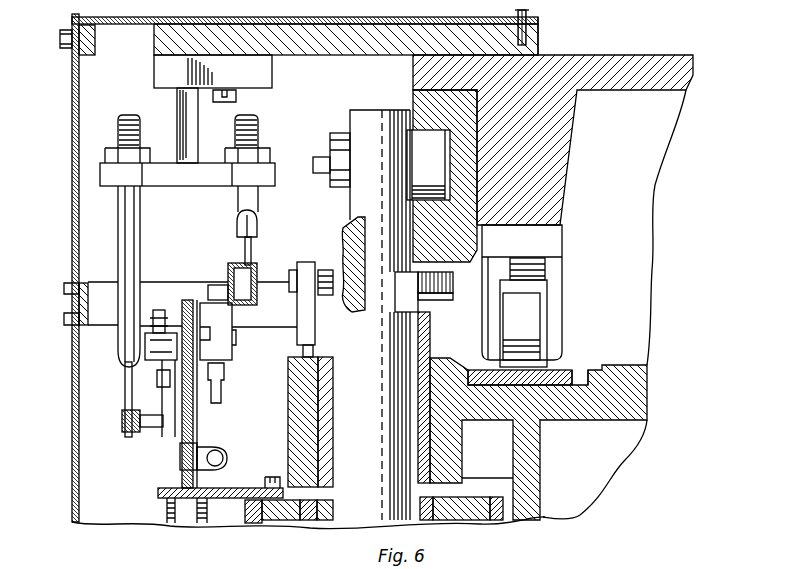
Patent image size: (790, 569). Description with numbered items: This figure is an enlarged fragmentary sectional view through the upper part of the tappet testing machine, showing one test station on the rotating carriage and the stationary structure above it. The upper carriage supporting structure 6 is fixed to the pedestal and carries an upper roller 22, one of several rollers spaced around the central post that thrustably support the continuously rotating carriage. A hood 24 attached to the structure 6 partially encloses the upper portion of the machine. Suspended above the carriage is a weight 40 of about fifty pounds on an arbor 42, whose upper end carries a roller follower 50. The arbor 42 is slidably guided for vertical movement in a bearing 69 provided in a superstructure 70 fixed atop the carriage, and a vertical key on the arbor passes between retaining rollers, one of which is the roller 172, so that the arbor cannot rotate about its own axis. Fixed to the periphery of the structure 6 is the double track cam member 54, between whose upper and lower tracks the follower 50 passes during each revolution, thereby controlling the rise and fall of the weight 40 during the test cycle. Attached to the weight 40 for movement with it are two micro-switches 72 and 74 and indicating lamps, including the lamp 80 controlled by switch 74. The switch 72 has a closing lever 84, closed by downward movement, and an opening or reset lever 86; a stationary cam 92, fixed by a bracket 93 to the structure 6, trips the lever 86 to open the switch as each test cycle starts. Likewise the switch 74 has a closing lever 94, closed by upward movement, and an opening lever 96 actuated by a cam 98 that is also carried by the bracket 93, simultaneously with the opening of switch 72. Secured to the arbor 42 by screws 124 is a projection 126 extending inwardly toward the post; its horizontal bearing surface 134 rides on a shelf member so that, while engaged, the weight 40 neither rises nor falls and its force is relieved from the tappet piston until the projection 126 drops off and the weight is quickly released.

The upper carriage supporting structure 6 is at (572, 68).
The upper roller 22 is at (530, 317).
The hood 24 is at (72, 470).
The weight 40 is at (273, 523).
The arbor 42 is at (350, 508).
The roller follower 50 is at (433, 137).
The double track cam member 54 is at (446, 272).
The bearing 69 is at (430, 373).
The superstructure 70 is at (543, 515).
The micro-switch 72 is at (155, 400).
The micro-switch 74 is at (220, 342).
The indicating lamp 80 is at (173, 467).
The switch closing lever 84 is at (160, 308).
The switch opening lever 86 is at (123, 363).
The stationary cam 92 is at (127, 335).
The bracket 93 is at (199, 187).
The switch closing lever 94 is at (220, 403).
The switch opening lever 96 is at (242, 248).
The cam 98 is at (256, 230).
The screw 124 is at (304, 264).
The projection 126 is at (412, 293).
The bearing surface 134 is at (420, 287).
The retaining roller 172 is at (327, 307).